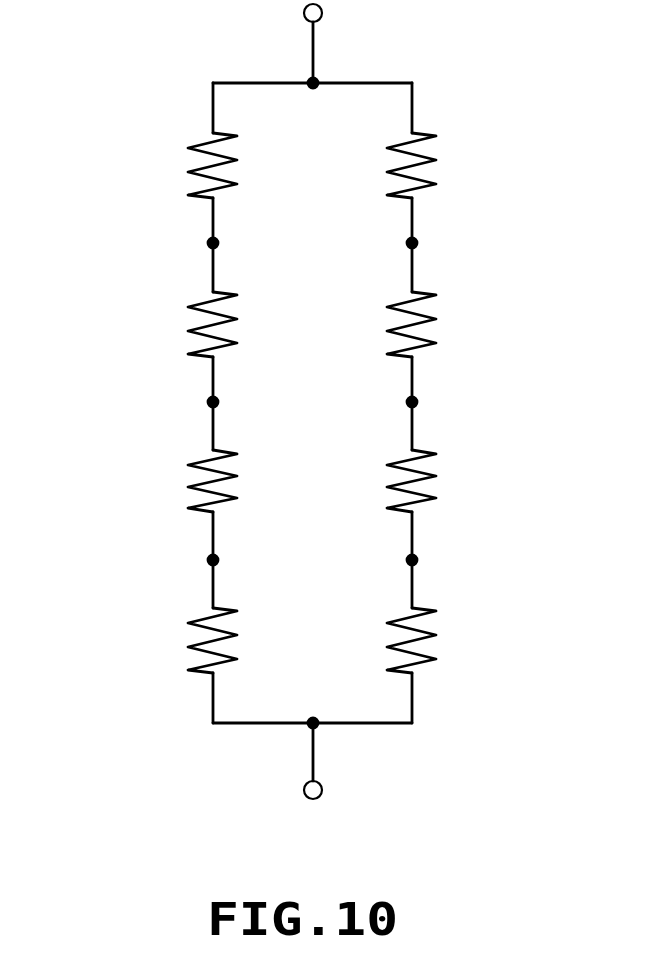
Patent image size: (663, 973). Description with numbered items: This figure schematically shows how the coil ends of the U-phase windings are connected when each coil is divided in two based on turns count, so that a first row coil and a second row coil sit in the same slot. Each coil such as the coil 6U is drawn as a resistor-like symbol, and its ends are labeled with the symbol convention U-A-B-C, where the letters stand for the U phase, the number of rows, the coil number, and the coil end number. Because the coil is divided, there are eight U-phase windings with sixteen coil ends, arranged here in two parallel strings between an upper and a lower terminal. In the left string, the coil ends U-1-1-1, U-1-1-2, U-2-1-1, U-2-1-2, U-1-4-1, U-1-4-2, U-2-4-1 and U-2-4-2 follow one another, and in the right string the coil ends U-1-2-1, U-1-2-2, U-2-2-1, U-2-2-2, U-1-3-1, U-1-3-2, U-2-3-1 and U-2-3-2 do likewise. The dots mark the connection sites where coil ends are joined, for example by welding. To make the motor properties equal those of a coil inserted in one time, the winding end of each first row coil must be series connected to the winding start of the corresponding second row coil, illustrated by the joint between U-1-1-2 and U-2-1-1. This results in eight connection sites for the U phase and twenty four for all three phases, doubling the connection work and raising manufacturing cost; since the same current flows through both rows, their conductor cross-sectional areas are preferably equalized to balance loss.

The U-phase coil 6U is at (188, 170).
The first row first coil first coil end U-1-1-1 is at (150, 108).
The first row first coil second coil end U-1-1-2 is at (150, 220).
The second row first coil first coil end U-2-1-1 is at (150, 267).
The second row first coil second coil end U-2-1-2 is at (150, 379).
The first row fourth coil first coil end U-1-4-1 is at (150, 426).
The first row fourth coil second coil end U-1-4-2 is at (150, 536).
The second row fourth coil first coil end U-2-4-1 is at (150, 584).
The second row fourth coil second coil end U-2-4-2 is at (150, 698).
The first row second coil first coil end U-1-2-1 is at (472, 108).
The first row second coil second coil end U-1-2-2 is at (472, 220).
The second row second coil first coil end U-2-2-1 is at (472, 267).
The second row second coil second coil end U-2-2-2 is at (472, 379).
The first row third coil first coil end U-1-3-1 is at (472, 426).
The first row third coil second coil end U-1-3-2 is at (472, 536).
The second row third coil first coil end U-2-3-1 is at (472, 584).
The second row third coil second coil end U-2-3-2 is at (472, 698).